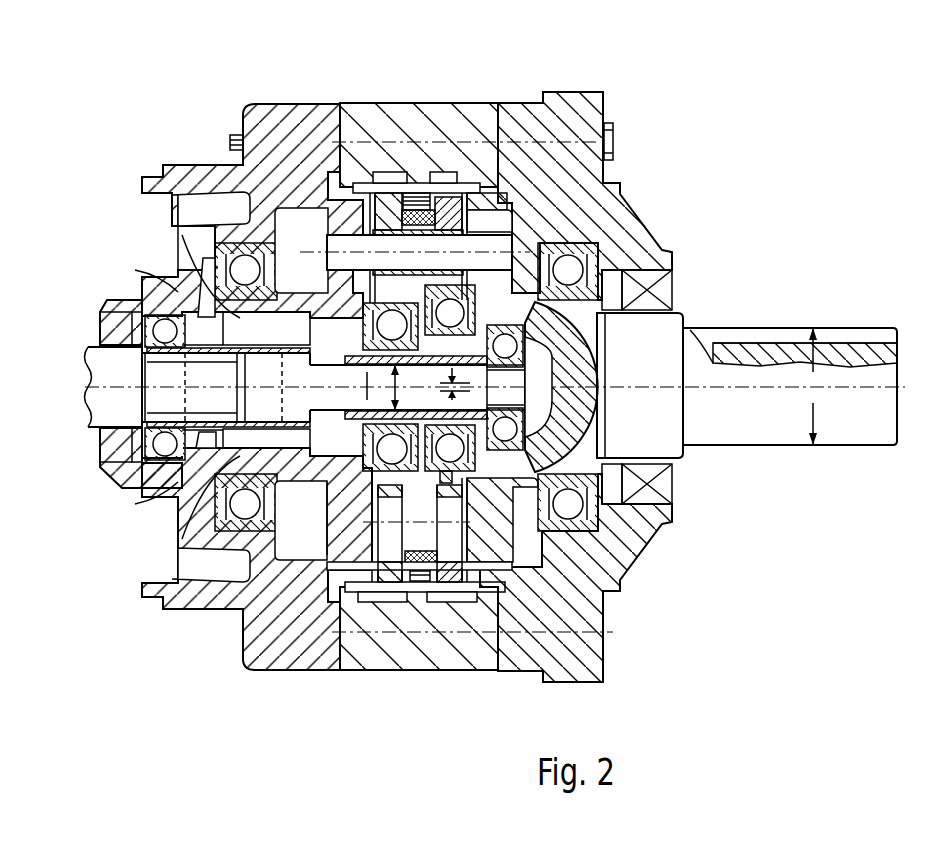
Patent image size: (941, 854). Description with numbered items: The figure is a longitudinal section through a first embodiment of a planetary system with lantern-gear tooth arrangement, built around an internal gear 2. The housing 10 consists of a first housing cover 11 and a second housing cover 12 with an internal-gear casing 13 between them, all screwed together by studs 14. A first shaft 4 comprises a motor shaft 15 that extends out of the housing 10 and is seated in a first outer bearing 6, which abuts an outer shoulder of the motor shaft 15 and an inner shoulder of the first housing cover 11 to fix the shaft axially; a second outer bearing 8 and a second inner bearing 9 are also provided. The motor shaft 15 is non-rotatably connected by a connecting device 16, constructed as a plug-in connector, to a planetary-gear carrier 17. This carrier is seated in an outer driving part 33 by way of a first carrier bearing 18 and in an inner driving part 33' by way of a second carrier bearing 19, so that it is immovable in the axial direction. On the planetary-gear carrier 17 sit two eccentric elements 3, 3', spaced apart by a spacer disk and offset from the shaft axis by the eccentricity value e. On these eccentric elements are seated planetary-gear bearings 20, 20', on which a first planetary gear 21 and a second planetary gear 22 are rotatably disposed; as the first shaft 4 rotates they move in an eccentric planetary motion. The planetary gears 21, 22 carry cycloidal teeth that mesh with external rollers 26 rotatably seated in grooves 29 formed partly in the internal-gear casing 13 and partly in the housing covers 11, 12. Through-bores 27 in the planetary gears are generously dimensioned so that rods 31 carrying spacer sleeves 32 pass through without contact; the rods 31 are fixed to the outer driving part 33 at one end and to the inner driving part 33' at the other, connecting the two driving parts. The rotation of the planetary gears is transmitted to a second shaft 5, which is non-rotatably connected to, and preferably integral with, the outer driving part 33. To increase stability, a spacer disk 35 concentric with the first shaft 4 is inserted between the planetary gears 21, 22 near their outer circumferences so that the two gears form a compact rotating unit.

The internal gear 2 is at (408, 674).
The eccentric element 3 is at (346, 518).
The eccentric element 3' is at (453, 491).
The first shaft 4 is at (93, 430).
The second shaft 5 is at (790, 446).
The first outer bearing 6 is at (118, 302).
The second outer bearing 8 is at (604, 246).
The second inner bearing 9 is at (212, 257).
The housing 10 is at (612, 92).
The first housing cover 11 is at (258, 117).
The second housing cover 12 is at (608, 212).
The internal-gear casing 13 is at (352, 104).
The studs 14 is at (617, 141).
The motor shaft 15 is at (124, 410).
The connecting device 16 is at (195, 492).
The planetary-gear carrier 17 is at (254, 408).
The first carrier bearing 18 is at (316, 478).
The second carrier bearing 19 is at (560, 440).
The planetary-gear bearing 20 is at (419, 530).
The planetary-gear bearing 20' is at (508, 404).
The first planetary gear 21 is at (372, 183).
The second planetary gear 22 is at (458, 183).
The external rollers 26 is at (420, 193).
The through-bores 27 is at (392, 172).
The grooves 29 is at (408, 210).
The rods 31 is at (340, 247).
The spacer sleeves 32 is at (347, 213).
The outer driving part 33 is at (640, 385).
The inner driving part 33' is at (164, 377).
The spacer disk 35 is at (428, 592).